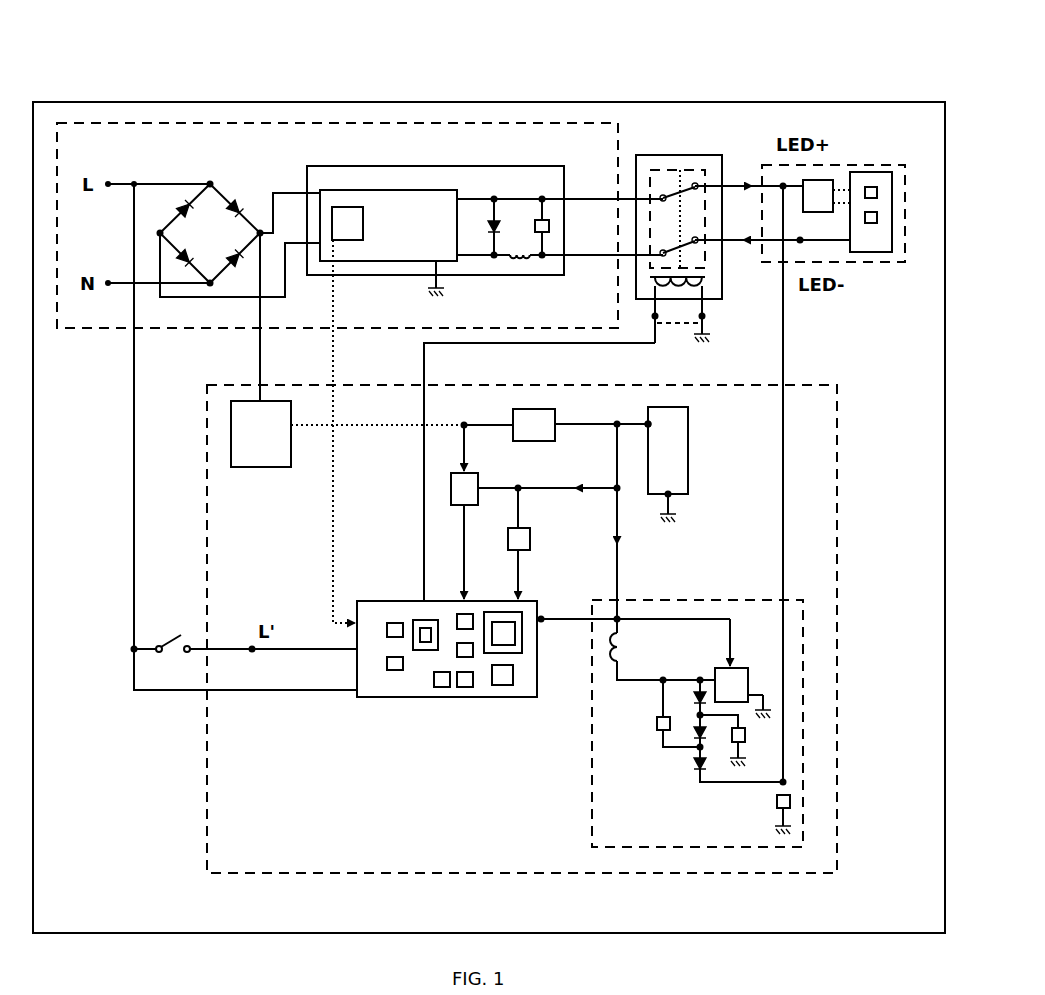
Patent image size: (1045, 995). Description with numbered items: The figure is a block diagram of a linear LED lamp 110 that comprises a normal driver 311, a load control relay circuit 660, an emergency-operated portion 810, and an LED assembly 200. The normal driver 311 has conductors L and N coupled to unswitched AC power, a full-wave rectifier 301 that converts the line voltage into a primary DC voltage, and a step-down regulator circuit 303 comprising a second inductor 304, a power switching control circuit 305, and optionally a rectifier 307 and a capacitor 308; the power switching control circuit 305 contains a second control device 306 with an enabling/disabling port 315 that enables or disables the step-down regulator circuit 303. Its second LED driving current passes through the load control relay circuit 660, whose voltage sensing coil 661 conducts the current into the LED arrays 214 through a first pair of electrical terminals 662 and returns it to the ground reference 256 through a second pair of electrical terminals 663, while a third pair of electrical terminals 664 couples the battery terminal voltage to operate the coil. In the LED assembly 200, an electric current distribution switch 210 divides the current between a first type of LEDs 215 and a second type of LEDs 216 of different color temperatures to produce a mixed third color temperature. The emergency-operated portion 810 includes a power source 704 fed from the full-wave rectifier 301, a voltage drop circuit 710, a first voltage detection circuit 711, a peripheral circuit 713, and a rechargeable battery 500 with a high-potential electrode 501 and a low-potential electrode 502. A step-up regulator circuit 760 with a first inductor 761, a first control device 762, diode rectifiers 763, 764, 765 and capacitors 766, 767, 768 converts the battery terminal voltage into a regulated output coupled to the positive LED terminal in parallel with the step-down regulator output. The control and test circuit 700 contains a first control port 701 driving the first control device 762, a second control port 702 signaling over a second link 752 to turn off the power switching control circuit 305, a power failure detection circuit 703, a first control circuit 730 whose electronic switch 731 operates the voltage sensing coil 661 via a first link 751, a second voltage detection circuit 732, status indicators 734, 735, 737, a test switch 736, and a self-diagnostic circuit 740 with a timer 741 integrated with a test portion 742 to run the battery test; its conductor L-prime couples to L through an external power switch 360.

The linear LED lamp 110 is at (272, 98).
The LED assembly 200 is at (878, 264).
The electric current distribution switch 210 is at (820, 178).
The LED arrays 214 is at (870, 170).
The first type of LEDs 215 is at (879, 189).
The second type of LEDs 216 is at (879, 225).
The ground reference 256 is at (444, 292).
The full-wave rectifier 301 is at (192, 178).
The step-down regulator circuit 303 is at (355, 164).
The second inductor 304 is at (525, 262).
The power switching control circuit 305 is at (333, 188).
The second control device 306 is at (347, 242).
The rectifier 307 is at (498, 218).
The capacitor 308 is at (552, 220).
The normal driver 311 is at (420, 118).
The enabling/disabling port 315 is at (322, 262).
The external power switch 360 is at (170, 640).
The rechargeable battery 500 is at (690, 440).
The high-potential electrode 501 is at (645, 421).
The low-potential electrode 502 is at (672, 497).
The load control relay circuit 660 is at (723, 152).
The voltage sensing coil 661 is at (650, 300).
The first pair of electrical terminals 662 is at (684, 183).
The second pair of electrical terminals 663 is at (698, 246).
The third pair of electrical terminals 664 is at (680, 325).
The control and test circuit 700 is at (355, 699).
The first control port 701 is at (542, 603).
The second control port 702 is at (355, 611).
The power failure detection circuit 703 is at (386, 663).
The power source 704 is at (228, 449).
The voltage drop circuit 710 is at (553, 440).
The first voltage detection circuit 711 is at (473, 506).
The peripheral circuit 713 is at (524, 527).
The first control circuit 730 is at (428, 653).
The electronic switch 731 is at (418, 652).
The second voltage detection circuit 732 is at (396, 621).
The first status indicator 734 is at (468, 612).
The second status indicator 735 is at (470, 659).
The test switch 736 is at (466, 689).
The status indicator 737 is at (443, 689).
The self-diagnostic circuit 740 is at (528, 657).
The timer 741 is at (510, 611).
The test portion 742 is at (506, 687).
The first link 751 is at (423, 449).
The second link 752 is at (332, 449).
The step-up regulator circuit 760 is at (589, 786).
The first inductor 761 is at (614, 641).
The first control device 762 is at (720, 667).
The diode rectifier 763 is at (697, 694).
The diode rectifier 764 is at (697, 739).
The diode rectifier 765 is at (704, 770).
The capacitor 766 is at (748, 736).
The capacitor 767 is at (658, 727).
The capacitor 768 is at (792, 801).
The emergency-operated portion 810 is at (502, 875).